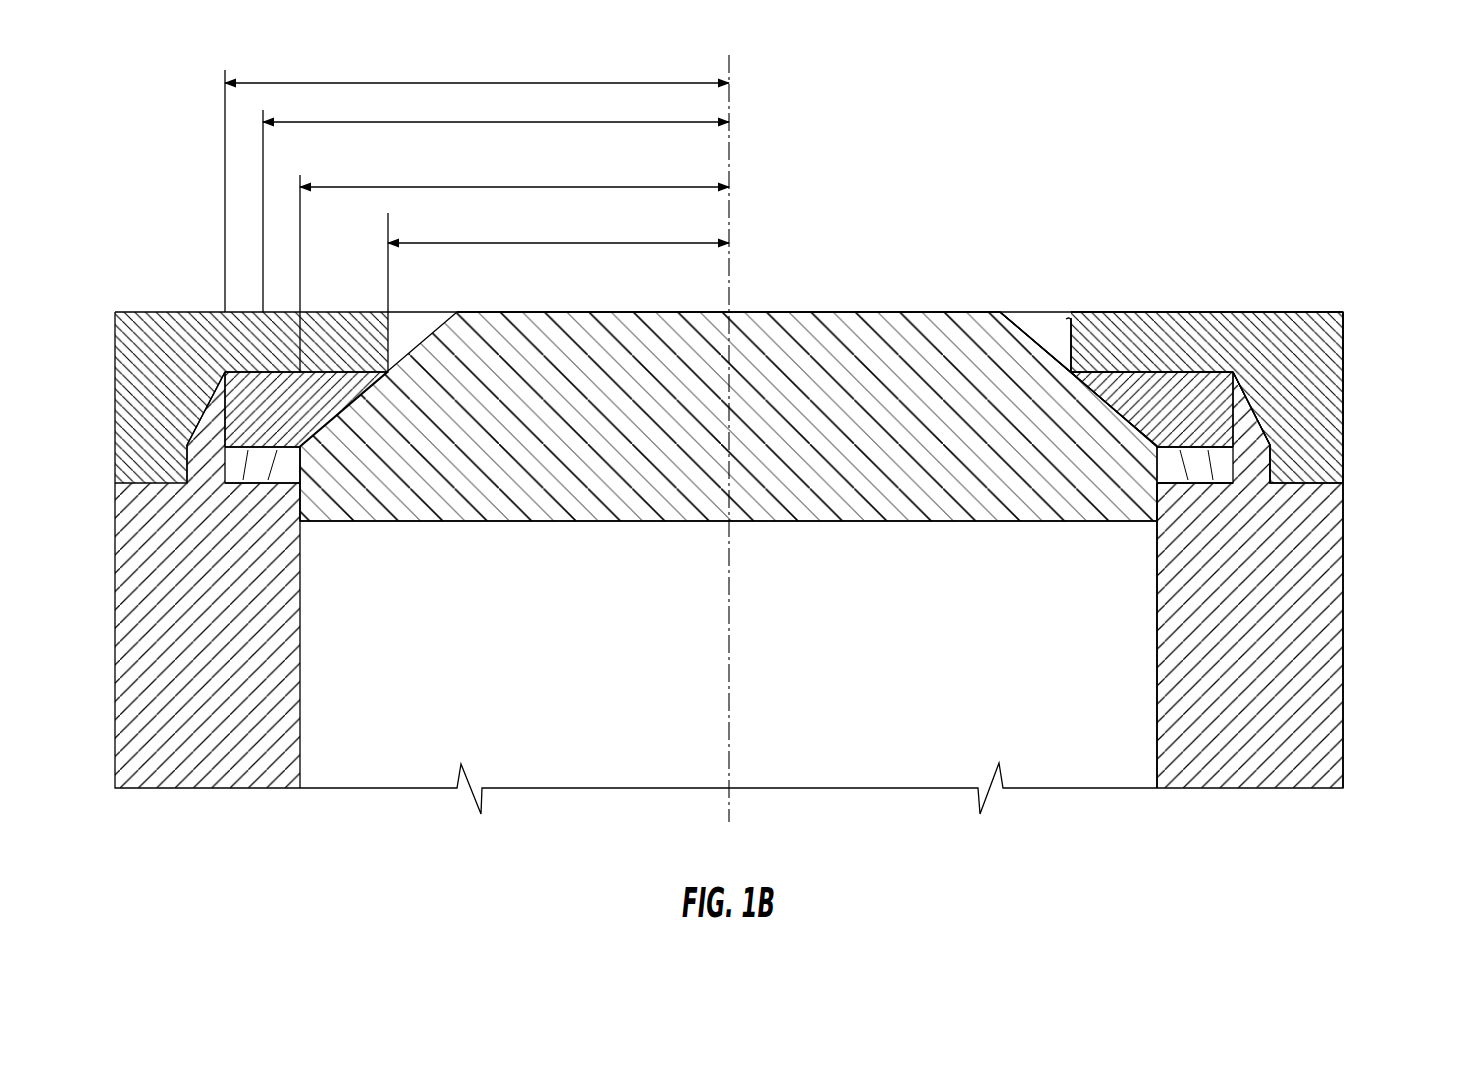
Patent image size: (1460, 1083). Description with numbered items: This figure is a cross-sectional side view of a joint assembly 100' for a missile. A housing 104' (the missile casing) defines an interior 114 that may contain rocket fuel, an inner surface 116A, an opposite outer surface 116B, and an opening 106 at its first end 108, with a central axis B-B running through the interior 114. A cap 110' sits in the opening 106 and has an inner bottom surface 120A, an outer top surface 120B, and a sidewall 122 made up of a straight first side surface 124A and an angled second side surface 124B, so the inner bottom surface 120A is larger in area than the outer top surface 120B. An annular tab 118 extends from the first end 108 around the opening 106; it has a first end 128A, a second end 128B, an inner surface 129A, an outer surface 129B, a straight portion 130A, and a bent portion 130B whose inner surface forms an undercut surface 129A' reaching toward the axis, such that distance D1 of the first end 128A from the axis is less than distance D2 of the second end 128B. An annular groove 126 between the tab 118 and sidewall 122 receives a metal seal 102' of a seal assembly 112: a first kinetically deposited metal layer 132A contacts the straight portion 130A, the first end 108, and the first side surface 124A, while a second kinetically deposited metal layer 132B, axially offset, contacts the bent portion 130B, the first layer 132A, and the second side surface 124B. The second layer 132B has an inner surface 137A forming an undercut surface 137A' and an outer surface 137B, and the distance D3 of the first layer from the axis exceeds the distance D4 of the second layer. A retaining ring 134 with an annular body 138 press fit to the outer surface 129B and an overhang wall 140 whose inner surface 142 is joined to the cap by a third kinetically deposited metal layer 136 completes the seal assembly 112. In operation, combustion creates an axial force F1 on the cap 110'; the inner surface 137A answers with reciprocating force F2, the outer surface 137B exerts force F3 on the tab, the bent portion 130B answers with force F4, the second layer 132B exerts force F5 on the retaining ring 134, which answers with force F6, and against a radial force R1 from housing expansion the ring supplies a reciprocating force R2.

The joint assembly 100' is at (765, 443).
The metal seal 102' is at (1078, 436).
The housing 104' is at (766, 563).
The opening 106 is at (822, 511).
The first end of the housing 108 is at (1343, 456).
The cap 110' is at (728, 286).
The seal assembly 112 is at (1355, 268).
The interior 114 is at (1140, 722).
The inner surface of the housing 116A is at (1157, 632).
The outer surface of the housing 116B is at (1345, 622).
The annular tab 118 is at (1262, 415).
The inner bottom surface of the cap 120A is at (852, 522).
The outer top surface of the cap 120B is at (968, 313).
The sidewall of the cap 122 is at (1045, 355).
The first side surface 124A is at (1162, 470).
The second side surface 124B is at (1025, 335).
The annular groove 126 is at (1222, 497).
The first end of the annular tab 128A is at (1255, 478).
The second end of the annular tab 128B is at (1225, 365).
The inner surface of the annular tab 129A is at (1153, 502).
The undercut surface 129A' is at (1152, 321).
The outer surface of the annular tab 129B is at (1300, 360).
The straight portion of the annular tab 130A is at (1273, 476).
The bent portion of the annular tab 130B is at (1185, 370).
The first kinetically deposited metal layer 132A is at (1185, 478).
The second kinetically deposited metal layer 132B is at (1213, 437).
The retaining ring 134 is at (1343, 338).
The third kinetically deposited metal layer 136 is at (1020, 328).
The inner surface of the second metal layer 137A is at (1063, 486).
The undercut surface of the second metal layer 137A' is at (999, 475).
The outer surface of the second metal layer 137B is at (1270, 365).
The annular body 138 is at (1322, 375).
The overhang wall 140 is at (1125, 325).
The inner surface of the overhang wall 142 is at (1070, 320).
The distance D1 is at (496, 203).
The distance D2 is at (477, 183).
The distance D3 is at (514, 265).
The distance D4 is at (558, 262).
The axial force F1 is at (345, 521).
The reciprocating axial force F2 is at (345, 420).
The axial force F3 is at (238, 418).
The reciprocating axial force F4 is at (241, 447).
The axial force F5 is at (322, 483).
The reciprocating axial force F6 is at (322, 372).
The radial force R1 is at (258, 468).
The reciprocating axial force R2 is at (318, 467).